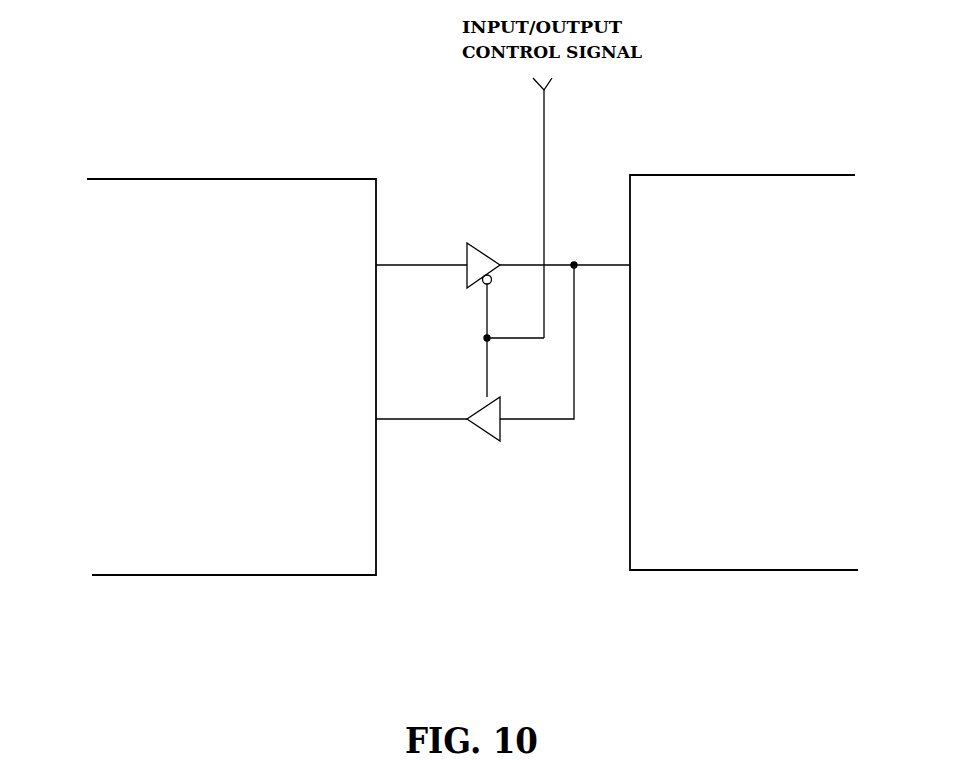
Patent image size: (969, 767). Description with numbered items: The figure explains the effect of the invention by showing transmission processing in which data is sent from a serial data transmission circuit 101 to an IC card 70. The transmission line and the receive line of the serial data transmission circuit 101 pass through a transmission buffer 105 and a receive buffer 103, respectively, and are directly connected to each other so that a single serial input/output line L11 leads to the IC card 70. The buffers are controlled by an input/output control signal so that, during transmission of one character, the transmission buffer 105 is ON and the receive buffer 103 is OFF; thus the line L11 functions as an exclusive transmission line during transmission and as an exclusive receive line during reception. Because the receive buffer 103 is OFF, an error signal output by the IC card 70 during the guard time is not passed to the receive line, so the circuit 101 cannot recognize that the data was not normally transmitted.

The serial data transmission circuit 101 is at (242, 575).
The IC card 70 is at (718, 570).
The transmission buffer 105 is at (482, 252).
The receive buffer 103 is at (482, 432).
The SIO line L11 is at (560, 263).